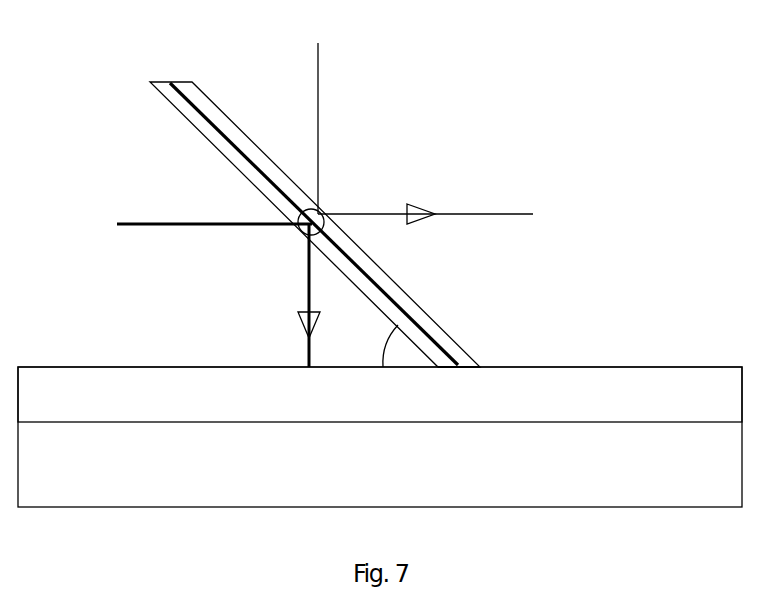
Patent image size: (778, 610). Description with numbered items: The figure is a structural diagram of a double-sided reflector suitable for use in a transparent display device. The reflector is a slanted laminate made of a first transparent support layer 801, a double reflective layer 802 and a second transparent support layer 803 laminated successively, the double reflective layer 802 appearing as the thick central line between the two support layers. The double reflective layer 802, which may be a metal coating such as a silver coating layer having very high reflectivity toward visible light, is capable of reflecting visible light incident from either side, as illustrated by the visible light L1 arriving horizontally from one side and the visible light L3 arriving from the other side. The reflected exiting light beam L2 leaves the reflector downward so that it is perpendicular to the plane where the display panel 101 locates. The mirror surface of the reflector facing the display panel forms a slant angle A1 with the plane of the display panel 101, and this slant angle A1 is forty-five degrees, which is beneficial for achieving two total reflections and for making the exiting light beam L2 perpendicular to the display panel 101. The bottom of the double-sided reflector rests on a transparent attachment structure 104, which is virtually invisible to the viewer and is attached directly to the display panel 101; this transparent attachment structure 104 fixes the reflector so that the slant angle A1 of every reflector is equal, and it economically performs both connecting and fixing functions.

The display panel 101 is at (592, 452).
The transparent attachment structure 104 is at (141, 410).
The first transparent support layer 801 is at (155, 82).
The double reflective layer 802 is at (195, 105).
The second transparent support layer 803 is at (467, 360).
The visible light L1 is at (325, 215).
The exiting light beam L2 is at (295, 295).
The visible light L3 is at (337, 128).
The slant angle A1 is at (371, 346).